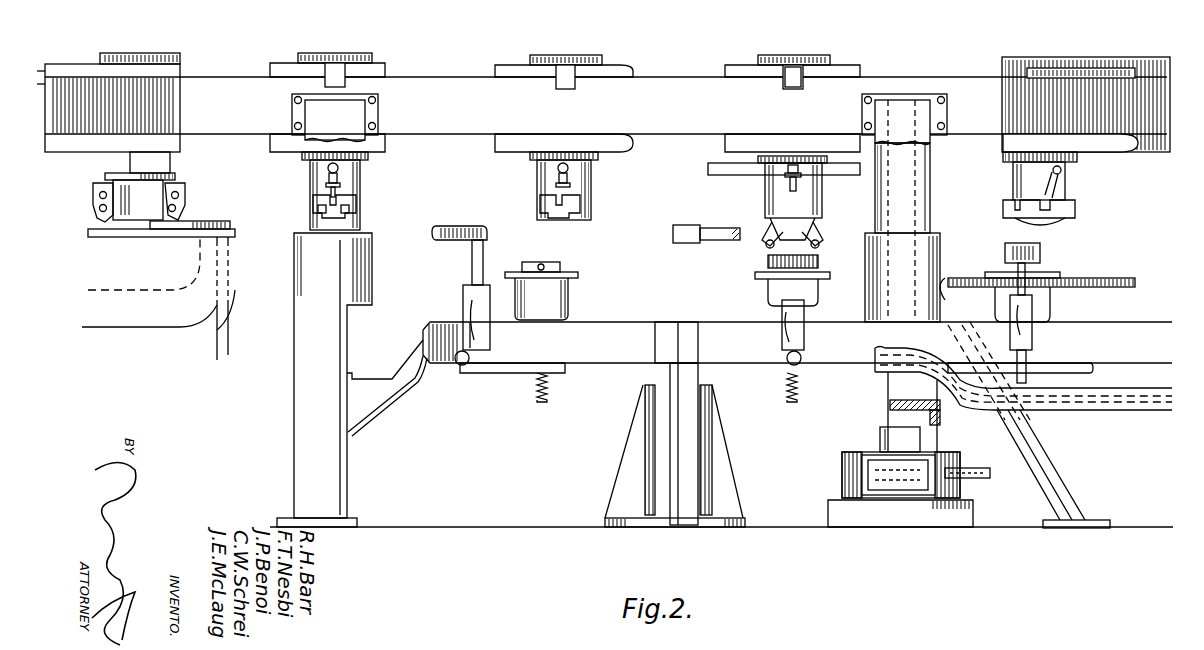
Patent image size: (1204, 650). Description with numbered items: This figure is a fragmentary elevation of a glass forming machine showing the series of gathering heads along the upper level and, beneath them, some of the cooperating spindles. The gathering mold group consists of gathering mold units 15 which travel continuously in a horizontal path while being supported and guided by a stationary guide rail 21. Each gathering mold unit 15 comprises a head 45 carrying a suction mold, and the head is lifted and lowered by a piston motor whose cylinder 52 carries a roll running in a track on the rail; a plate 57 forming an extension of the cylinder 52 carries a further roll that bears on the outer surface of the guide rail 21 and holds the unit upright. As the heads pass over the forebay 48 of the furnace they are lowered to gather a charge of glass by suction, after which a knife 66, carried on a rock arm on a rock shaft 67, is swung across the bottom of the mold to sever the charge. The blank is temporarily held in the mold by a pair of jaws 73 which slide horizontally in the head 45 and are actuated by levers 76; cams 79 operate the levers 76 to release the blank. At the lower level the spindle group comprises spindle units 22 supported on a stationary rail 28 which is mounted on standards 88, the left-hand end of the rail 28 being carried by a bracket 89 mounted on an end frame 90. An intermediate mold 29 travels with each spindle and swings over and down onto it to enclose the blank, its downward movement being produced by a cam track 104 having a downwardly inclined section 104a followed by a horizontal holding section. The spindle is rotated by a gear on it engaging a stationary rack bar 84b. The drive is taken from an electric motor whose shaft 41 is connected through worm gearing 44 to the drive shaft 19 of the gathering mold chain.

The guide rail 21 is at (441, 87).
The cylinder 52 is at (838, 63).
The plate 57 is at (787, 66).
The gathering mold unit 15 is at (380, 158).
The jaws 73 is at (358, 218).
The head 45 is at (590, 188).
The levers 76 is at (182, 208).
The knife 66 is at (150, 236).
The forebay 48 is at (181, 328).
The rock shaft 67 is at (224, 337).
The end frame 90 is at (332, 347).
The bracket 89 is at (383, 398).
The rail 28 is at (610, 326).
The intermediate mold 29 is at (452, 226).
The spindle unit 22 is at (584, 276).
The cams 79 is at (708, 167).
The standards 88 is at (657, 368).
The stationary rack bar 84b is at (1095, 279).
The downwardly inclined section 104a is at (890, 382).
The cam track 104 is at (1104, 412).
The drive shaft 19 is at (888, 428).
The gearing 44 is at (866, 452).
The shaft 41 is at (988, 479).